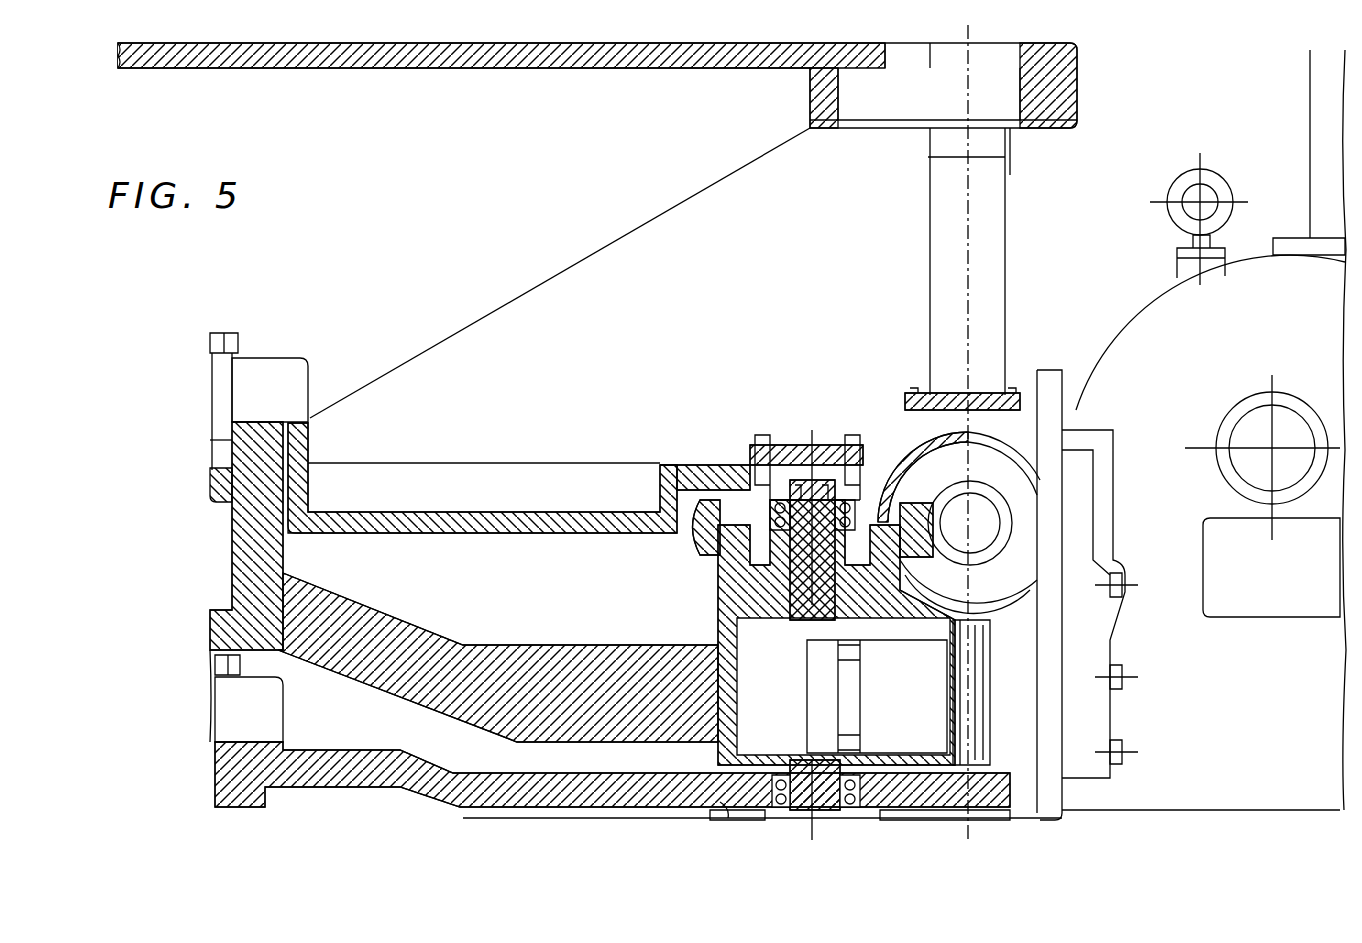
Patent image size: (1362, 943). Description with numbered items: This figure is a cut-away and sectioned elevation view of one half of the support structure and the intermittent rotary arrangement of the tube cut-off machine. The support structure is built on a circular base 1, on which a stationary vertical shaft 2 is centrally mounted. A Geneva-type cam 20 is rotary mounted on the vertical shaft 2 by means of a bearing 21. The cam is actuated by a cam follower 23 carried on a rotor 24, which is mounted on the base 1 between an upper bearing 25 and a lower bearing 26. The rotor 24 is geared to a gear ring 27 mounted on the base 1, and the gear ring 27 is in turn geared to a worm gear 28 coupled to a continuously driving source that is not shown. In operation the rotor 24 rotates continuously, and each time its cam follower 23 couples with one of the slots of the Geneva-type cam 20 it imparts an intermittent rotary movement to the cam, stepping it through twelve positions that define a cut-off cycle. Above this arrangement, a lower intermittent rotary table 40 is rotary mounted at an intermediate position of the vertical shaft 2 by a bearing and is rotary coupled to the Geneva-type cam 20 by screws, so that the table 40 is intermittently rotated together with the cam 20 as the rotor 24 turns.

The circular base 1 is at (505, 788).
The stationary vertical shaft 2 is at (203, 537).
The Geneva-type cam 20 is at (413, 622).
The bearing 21 is at (218, 447).
The cam follower 23 is at (977, 720).
The rotor 24 is at (718, 607).
The upper bearing 25 is at (843, 445).
The lower bearing 26 is at (850, 820).
The gear ring 27 is at (693, 548).
The worm gear 28 is at (992, 532).
The lower intermittent rotary table 40 is at (488, 70).